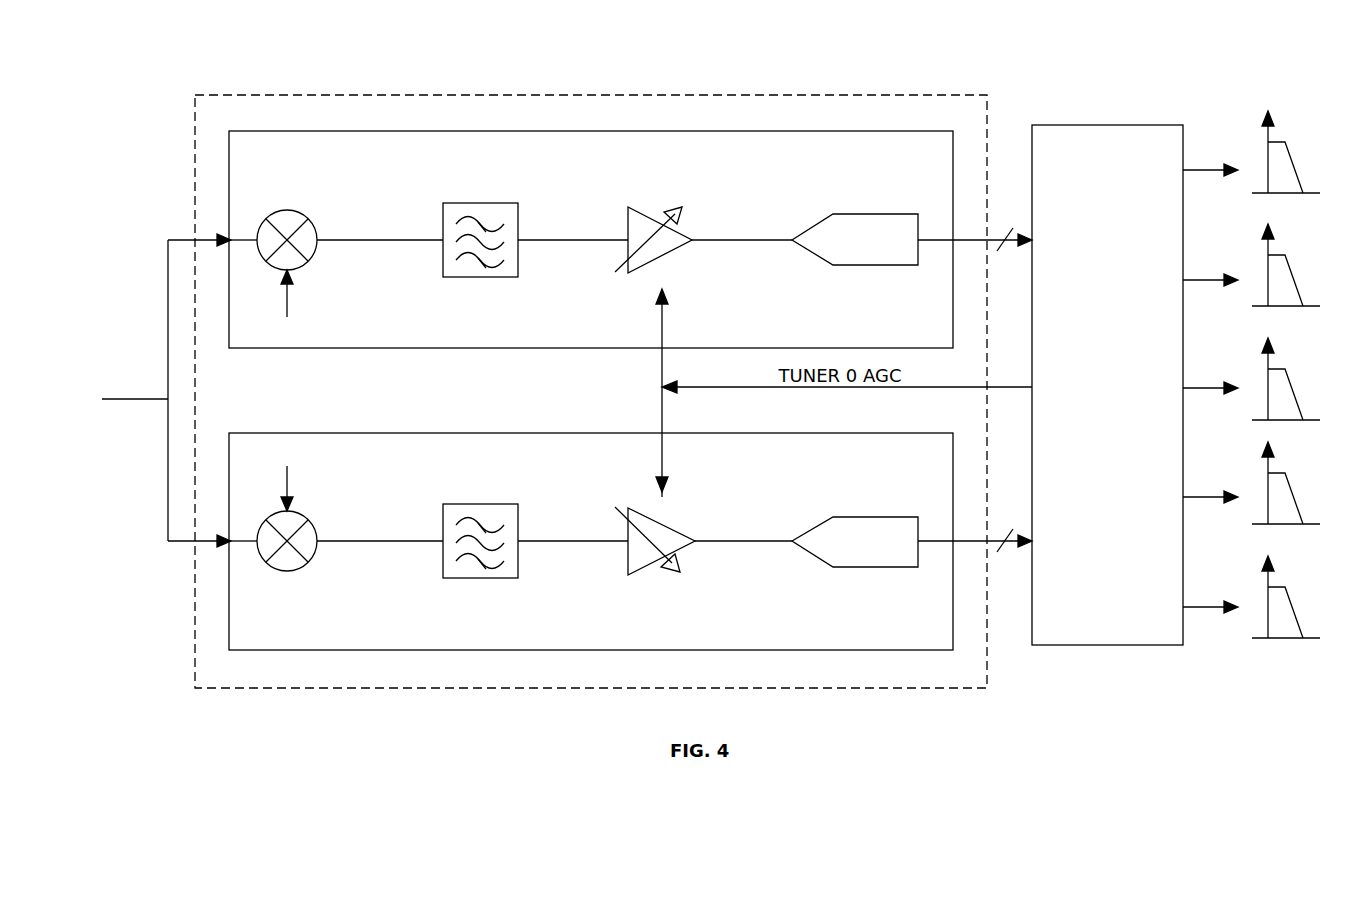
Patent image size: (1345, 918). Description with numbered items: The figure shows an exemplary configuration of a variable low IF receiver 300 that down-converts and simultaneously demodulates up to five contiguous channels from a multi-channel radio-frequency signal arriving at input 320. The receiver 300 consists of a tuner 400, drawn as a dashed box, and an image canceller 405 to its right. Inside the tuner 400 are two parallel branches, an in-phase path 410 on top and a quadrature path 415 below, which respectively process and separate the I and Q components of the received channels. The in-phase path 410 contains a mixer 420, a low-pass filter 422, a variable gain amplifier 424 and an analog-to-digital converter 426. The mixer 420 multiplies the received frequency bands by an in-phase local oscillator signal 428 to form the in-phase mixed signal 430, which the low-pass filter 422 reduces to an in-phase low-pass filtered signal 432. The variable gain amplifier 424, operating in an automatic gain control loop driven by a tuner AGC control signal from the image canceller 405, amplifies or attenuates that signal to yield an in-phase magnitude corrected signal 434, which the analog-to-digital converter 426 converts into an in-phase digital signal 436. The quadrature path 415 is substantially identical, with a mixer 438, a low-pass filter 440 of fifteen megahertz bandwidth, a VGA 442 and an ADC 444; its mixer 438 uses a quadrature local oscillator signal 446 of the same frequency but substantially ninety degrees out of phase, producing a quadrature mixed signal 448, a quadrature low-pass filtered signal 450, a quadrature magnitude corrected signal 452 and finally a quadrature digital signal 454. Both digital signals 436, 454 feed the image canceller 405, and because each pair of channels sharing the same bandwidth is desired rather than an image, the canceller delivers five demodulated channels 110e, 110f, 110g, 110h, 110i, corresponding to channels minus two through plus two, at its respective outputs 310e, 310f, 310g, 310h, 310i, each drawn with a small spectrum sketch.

The variable low IF receiver 300 is at (676, 42).
The input 320 is at (143, 399).
The tuner 400 is at (591, 380).
The in-phase path 410 is at (591, 228).
The quadrature path 415 is at (591, 530).
The image canceller 405 is at (1107, 385).
The mixer 420 is at (306, 216).
The low-pass filter 422 is at (483, 203).
The variable gain amplifier 424 is at (690, 216).
The analog-to-digital converter 426 is at (860, 214).
The in-phase local oscillator signal 428 is at (287, 308).
The in-phase mixer output signal 430 is at (380, 243).
The in-phase low-pass filtered signal 432 is at (584, 243).
The in-phase magnitude corrected signal 434 is at (742, 243).
The in-phase digital signal 436 is at (938, 243).
The mixer 438 is at (306, 516).
The low-pass filter 440 is at (483, 504).
The VGA 442 is at (690, 518).
The ADC 444 is at (860, 517).
The quadrature local oscillator signal 446 is at (287, 477).
The quadrature mixed signal 448 is at (380, 544).
The quadrature low-pass filtered signal 450 is at (584, 544).
The quadrature magnitude corrected signal 452 is at (742, 544).
The quadrature digital signal 454 is at (938, 544).
The output 310e is at (1192, 170).
The output 310f is at (1193, 280).
The output 310g is at (1193, 388).
The output 310h is at (1193, 497).
The output 310i is at (1193, 607).
The demodulated channel 110e is at (1295, 152).
The demodulated channel 110f is at (1294, 265).
The demodulated channel 110g is at (1295, 379).
The demodulated channel 110h is at (1295, 483).
The demodulated channel 110i is at (1293, 597).